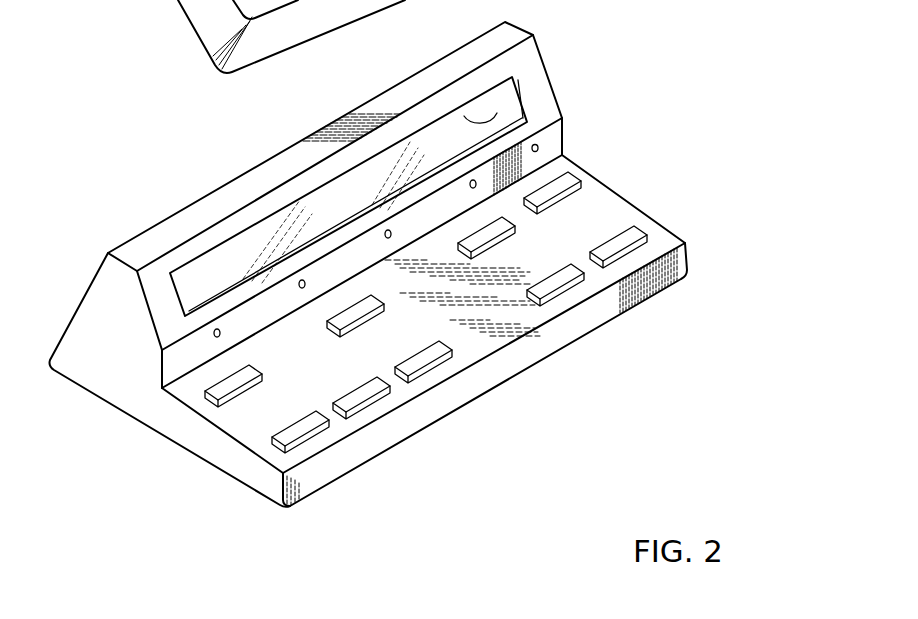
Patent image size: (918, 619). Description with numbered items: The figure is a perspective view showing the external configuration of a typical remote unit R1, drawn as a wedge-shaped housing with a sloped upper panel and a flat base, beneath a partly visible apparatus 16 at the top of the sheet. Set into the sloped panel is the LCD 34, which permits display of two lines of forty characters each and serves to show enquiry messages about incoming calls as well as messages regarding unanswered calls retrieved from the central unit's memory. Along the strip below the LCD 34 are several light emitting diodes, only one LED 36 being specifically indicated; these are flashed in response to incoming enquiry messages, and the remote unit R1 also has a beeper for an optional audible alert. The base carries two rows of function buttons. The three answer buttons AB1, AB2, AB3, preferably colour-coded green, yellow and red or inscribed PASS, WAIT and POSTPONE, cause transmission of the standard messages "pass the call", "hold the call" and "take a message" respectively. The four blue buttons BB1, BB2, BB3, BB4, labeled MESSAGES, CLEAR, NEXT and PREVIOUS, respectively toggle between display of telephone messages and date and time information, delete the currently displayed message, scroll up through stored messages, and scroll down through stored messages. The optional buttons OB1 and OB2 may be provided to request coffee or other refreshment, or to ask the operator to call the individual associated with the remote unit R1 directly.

The television receiver / controlled apparatus 16 is at (136, 0).
The remote unit R1 is at (416, 298).
The LCD 34 is at (497, 113).
The LED 36 is at (541, 151).
The optional button OB1 is at (224, 388).
The optional button OB2 is at (343, 318).
The answer button AB1 is at (293, 430).
The answer button AB2 is at (358, 392).
The answer button AB3 is at (424, 350).
The MESSAGES button BB1 is at (493, 231).
The CLEAR button BB2 is at (560, 194).
The NEXT button BB3 is at (554, 278).
The PREVIOUS button BB4 is at (616, 240).